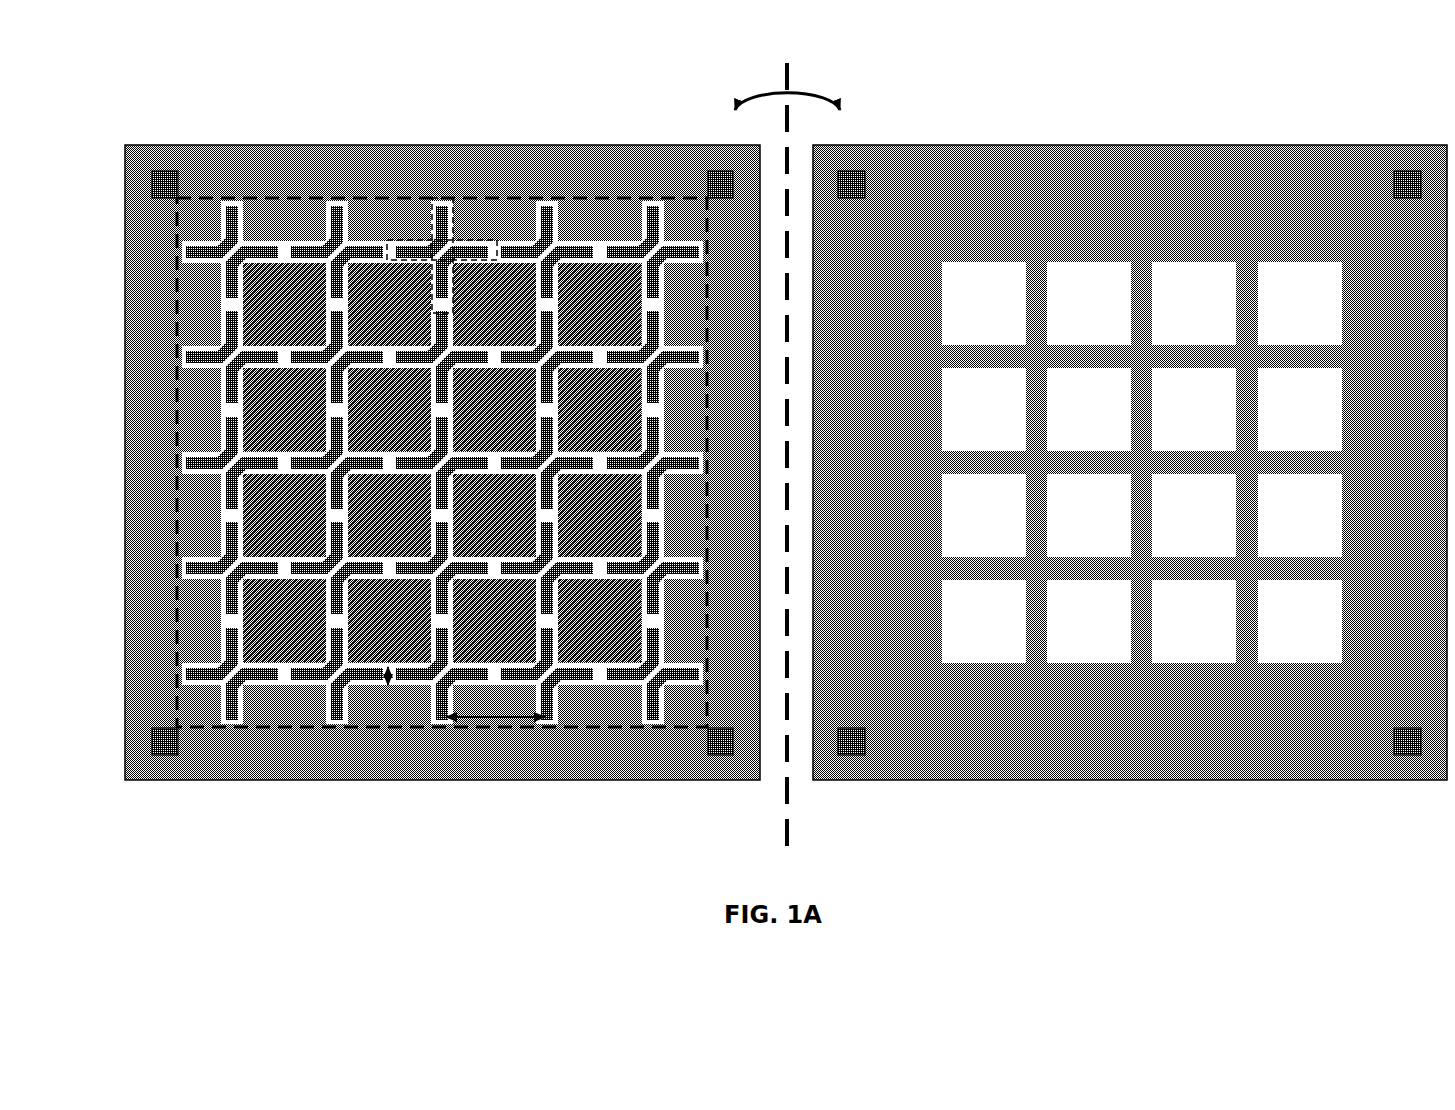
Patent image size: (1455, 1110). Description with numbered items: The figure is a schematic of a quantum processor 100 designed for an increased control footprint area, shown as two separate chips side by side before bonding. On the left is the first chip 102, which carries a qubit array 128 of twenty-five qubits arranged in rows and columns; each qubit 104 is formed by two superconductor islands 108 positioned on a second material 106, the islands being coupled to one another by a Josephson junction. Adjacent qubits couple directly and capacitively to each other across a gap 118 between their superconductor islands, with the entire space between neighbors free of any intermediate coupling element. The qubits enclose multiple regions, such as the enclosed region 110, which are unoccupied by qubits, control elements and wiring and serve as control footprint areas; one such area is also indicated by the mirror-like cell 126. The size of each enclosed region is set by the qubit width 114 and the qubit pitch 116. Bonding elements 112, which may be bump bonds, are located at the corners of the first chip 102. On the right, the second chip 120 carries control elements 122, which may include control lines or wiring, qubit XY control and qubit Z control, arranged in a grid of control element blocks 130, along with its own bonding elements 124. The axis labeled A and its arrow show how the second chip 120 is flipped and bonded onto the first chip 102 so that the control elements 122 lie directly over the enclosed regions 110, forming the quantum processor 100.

The quantum processor 100 is at (207, 88).
The first chip 102 is at (243, 143).
The qubit 104 is at (442, 196).
The second material 106 is at (676, 236).
The superconductor islands 108 is at (631, 260).
The enclosed region 110 is at (606, 299).
The bonding elements 112 is at (167, 168).
The qubit width 114 is at (388, 691).
The qubit pitch 116 is at (497, 722).
The gap 118 is at (602, 681).
The second chip 120 is at (1130, 143).
The control elements 122 is at (1298, 258).
The bonding elements 124 is at (853, 168).
The mirror element 126 is at (601, 316).
The qubit array 128 is at (297, 731).
The control elements 130 is at (984, 283).